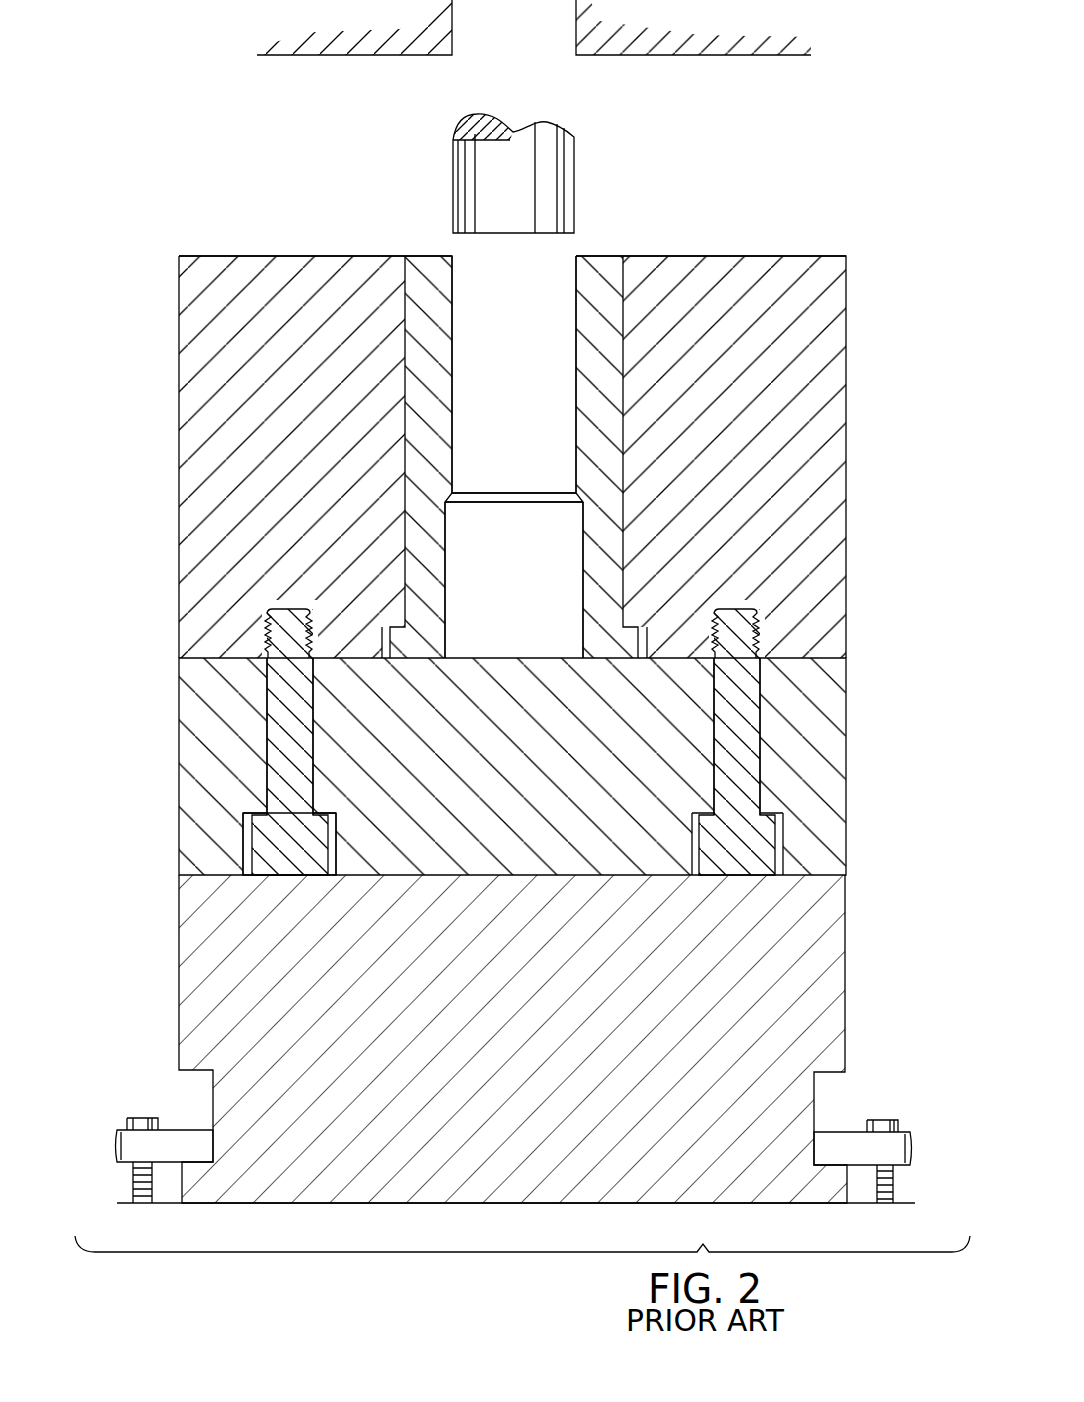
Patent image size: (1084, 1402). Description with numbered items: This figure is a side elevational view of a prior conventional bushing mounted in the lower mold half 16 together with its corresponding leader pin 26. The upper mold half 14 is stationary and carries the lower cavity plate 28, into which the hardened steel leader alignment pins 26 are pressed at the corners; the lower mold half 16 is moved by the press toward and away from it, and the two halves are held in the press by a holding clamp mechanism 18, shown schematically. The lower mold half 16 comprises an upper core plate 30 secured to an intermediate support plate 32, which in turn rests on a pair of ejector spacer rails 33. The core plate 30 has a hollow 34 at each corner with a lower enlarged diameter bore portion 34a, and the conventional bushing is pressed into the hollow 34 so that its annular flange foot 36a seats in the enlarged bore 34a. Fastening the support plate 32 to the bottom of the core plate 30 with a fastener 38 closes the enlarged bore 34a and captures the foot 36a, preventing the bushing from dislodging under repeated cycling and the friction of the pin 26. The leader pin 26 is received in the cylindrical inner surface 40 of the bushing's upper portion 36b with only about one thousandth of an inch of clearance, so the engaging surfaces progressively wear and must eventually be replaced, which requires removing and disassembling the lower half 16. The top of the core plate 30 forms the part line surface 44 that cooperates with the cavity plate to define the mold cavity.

The upper mold half 14 is at (768, 74).
The lower mold half 16 is at (522, 682).
The holding clamp mechanism 18 is at (850, 1124).
The leader alignment pin 26 is at (562, 133).
The lower cavity plate 28 is at (367, 56).
The upper core plate 30 is at (820, 326).
The intermediate support plate 32 is at (830, 773).
The ejector spacer rail 33 is at (835, 992).
The hollow 34 is at (410, 284).
The enlarged diameter bore portion 34a is at (245, 837).
The annular flange foot 36a is at (408, 643).
The upper portion of bushing 36b is at (607, 279).
The fastener 38 is at (453, 200).
The cylindrical inner surface 40 is at (575, 330).
The plate surface 44 is at (765, 256).